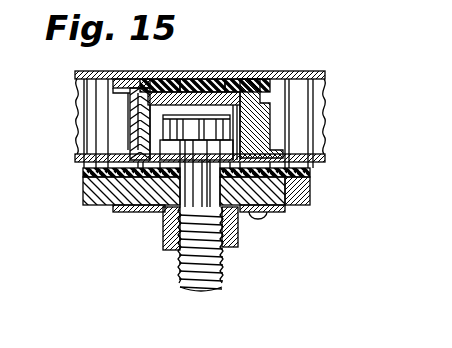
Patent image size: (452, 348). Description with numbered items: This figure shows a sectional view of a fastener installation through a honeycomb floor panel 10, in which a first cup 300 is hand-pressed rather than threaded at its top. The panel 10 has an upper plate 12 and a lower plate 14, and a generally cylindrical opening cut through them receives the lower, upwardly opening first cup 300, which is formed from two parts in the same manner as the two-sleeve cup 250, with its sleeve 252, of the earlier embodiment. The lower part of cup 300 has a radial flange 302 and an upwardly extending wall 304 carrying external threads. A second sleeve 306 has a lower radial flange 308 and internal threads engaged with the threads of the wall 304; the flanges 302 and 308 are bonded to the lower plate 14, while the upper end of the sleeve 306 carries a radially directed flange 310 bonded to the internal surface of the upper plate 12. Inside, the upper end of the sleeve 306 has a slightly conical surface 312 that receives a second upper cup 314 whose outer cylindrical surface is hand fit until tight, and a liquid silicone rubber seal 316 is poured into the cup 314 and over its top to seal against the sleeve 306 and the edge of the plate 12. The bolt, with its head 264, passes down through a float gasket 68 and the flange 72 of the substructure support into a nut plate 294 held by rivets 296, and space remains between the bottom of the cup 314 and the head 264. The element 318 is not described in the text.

The honeycomb floor panel 10 is at (334, 124).
The upper plate 12 is at (311, 72).
The lower plate 14 is at (318, 164).
The float gasket 68 is at (78, 179).
The flange of substructure support 72 is at (291, 207).
The first lower cup 250 is at (0, 108).
The sleeve 252 is at (56, 123).
The bolt head 264 is at (192, 160).
The nut plate 294 is at (235, 213).
The rivets 296 is at (263, 218).
The first cup 300 is at (278, 138).
The radial flange 302 is at (304, 206).
The upwardly extending wall 304 is at (258, 116).
The second sleeve 306 is at (129, 127).
The lower radial flange 308 is at (110, 177).
The radially directed flange 310 is at (127, 72).
The conical surface 312 is at (190, 73).
The second upper cup 314 is at (249, 77).
The liquid silicone rubber seal 316 is at (160, 74).
The top member 318 is at (224, 3).